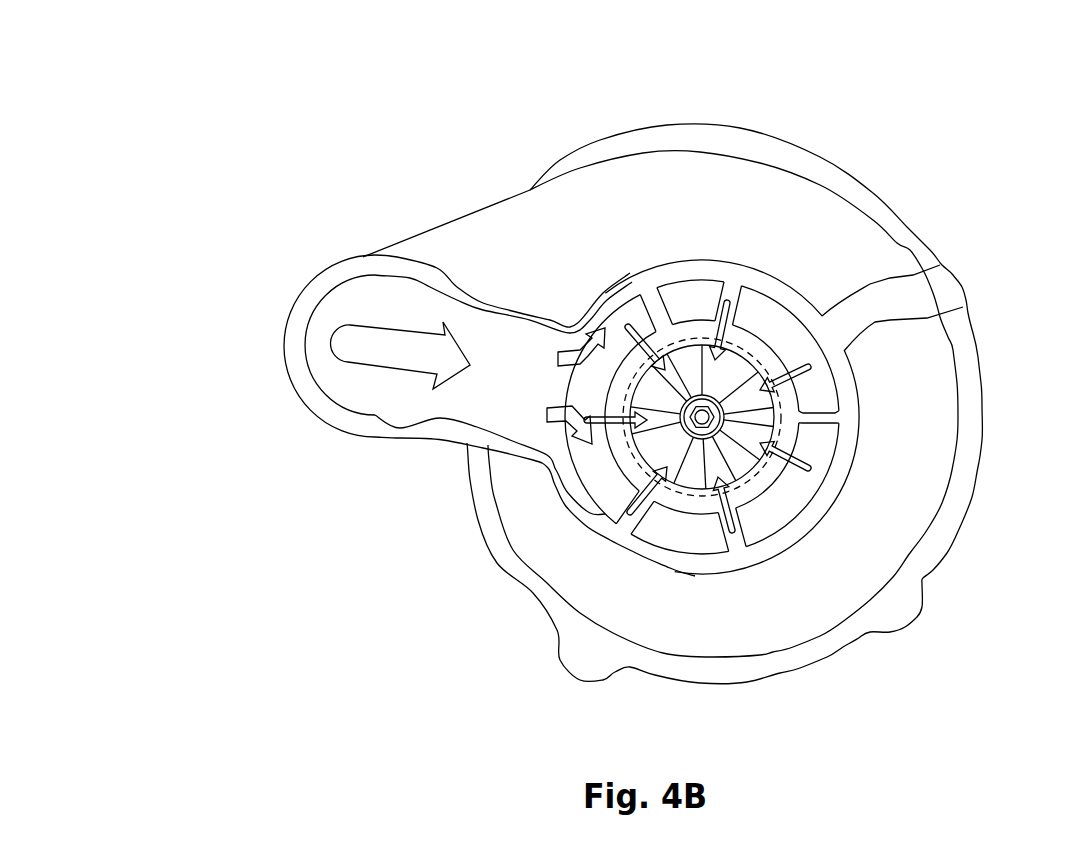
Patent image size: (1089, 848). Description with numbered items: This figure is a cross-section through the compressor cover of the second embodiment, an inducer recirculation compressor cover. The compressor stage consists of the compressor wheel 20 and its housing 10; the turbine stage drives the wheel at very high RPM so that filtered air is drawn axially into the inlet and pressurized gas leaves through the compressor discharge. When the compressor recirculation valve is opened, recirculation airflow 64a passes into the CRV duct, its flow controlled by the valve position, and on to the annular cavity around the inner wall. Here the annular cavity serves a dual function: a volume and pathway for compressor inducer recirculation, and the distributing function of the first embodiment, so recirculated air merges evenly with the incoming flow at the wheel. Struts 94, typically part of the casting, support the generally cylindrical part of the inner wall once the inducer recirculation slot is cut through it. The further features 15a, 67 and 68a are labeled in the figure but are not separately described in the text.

The housing 10 is at (675, 148).
The inlet channel 15a is at (412, 300).
The compressor wheel 20 is at (729, 378).
The struts 94 is at (822, 420).
The airflow 64a is at (395, 347).
The bypass air flow 67 is at (552, 418).
The inlet openings flow 68a is at (760, 515).